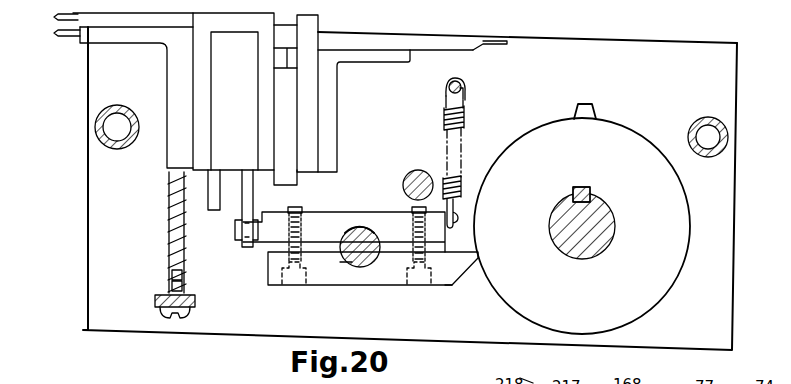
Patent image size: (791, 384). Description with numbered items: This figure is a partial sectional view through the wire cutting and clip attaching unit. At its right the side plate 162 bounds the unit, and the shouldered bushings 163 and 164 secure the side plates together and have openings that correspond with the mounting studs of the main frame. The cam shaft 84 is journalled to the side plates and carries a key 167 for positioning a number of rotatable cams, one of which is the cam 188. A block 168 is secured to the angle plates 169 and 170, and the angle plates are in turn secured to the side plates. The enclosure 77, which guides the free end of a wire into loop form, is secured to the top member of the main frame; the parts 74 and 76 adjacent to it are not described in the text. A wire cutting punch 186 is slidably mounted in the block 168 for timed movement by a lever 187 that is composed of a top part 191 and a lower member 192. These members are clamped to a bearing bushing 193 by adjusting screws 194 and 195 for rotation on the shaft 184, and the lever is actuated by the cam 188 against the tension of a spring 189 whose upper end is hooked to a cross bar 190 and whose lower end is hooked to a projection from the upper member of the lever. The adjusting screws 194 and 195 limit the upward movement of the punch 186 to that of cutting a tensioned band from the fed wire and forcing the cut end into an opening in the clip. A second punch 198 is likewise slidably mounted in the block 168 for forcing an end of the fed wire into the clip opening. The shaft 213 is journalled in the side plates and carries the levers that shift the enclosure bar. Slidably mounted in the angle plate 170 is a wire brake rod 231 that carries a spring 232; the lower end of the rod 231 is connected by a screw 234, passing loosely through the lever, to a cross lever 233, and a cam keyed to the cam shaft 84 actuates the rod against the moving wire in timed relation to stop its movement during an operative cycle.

The terminal pins 74 is at (47, 29).
The terminal block 76 is at (80, 40).
The enclosure 77 is at (133, 12).
The cam shaft 84 is at (582, 260).
The side plate 162 is at (722, 275).
The shouldered bushing 163 is at (708, 117).
The shouldered bushing 164 is at (120, 150).
The key 167 is at (592, 192).
The block 168 is at (247, 101).
The angle plate 169 is at (335, 118).
The angle plate 170 is at (170, 89).
The shaft 184 is at (356, 229).
The wire cutting punch 186 is at (243, 248).
The lever 187 is at (332, 283).
The cam 188 is at (668, 285).
The spring 189 is at (466, 136).
The cross bar 190 is at (464, 92).
The top part 191 is at (320, 218).
The lower member 192 is at (400, 284).
The bearing bushing 193 is at (347, 258).
The adjusting screw 194 is at (420, 290).
The adjusting screw 195 is at (290, 286).
The second punch 198 is at (217, 214).
The shaft 213 is at (419, 170).
The wire brake rod 231 is at (170, 196).
The spring 232 is at (168, 224).
The cross lever 233 is at (155, 300).
The screw 234 is at (186, 313).